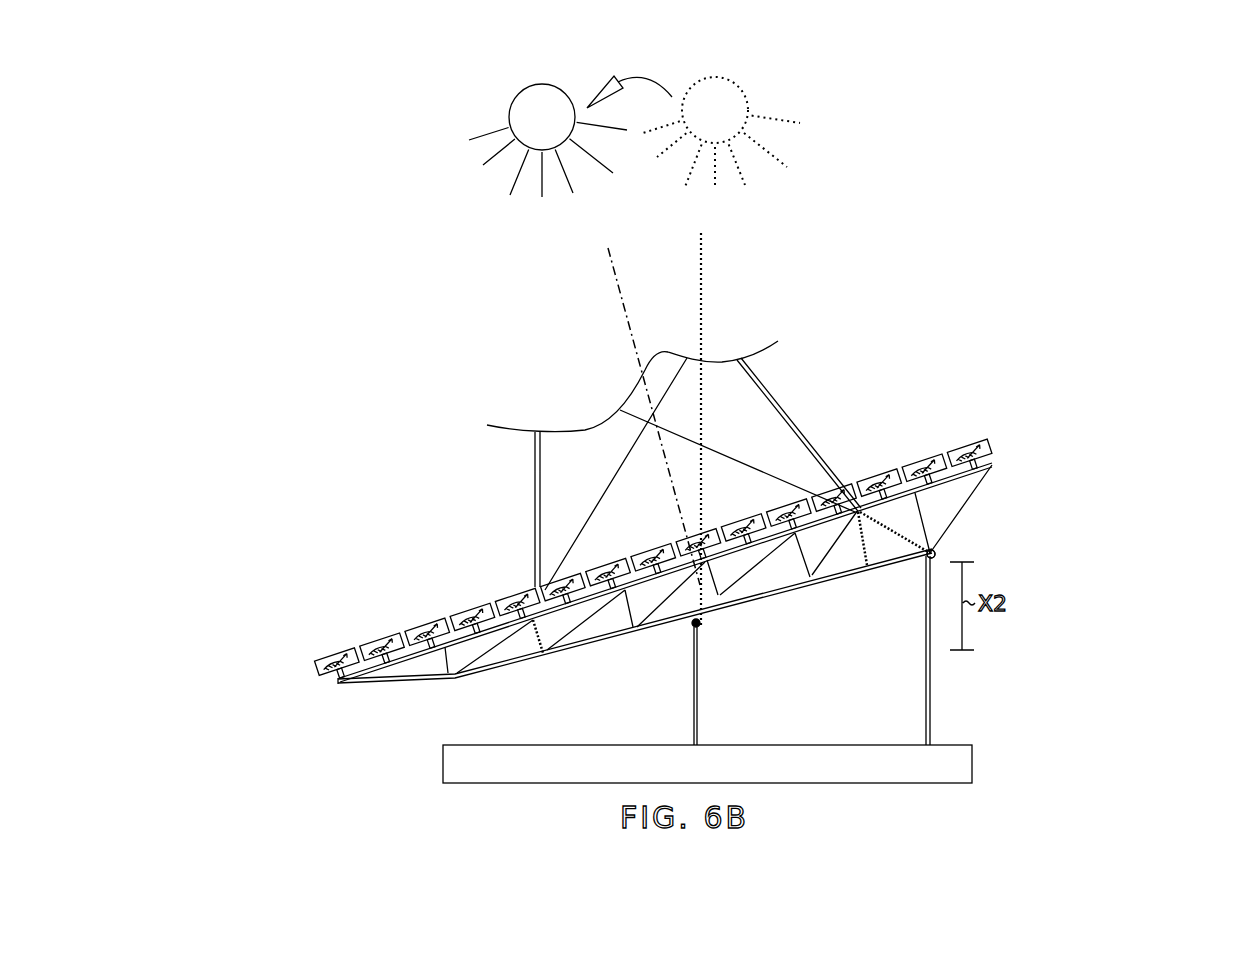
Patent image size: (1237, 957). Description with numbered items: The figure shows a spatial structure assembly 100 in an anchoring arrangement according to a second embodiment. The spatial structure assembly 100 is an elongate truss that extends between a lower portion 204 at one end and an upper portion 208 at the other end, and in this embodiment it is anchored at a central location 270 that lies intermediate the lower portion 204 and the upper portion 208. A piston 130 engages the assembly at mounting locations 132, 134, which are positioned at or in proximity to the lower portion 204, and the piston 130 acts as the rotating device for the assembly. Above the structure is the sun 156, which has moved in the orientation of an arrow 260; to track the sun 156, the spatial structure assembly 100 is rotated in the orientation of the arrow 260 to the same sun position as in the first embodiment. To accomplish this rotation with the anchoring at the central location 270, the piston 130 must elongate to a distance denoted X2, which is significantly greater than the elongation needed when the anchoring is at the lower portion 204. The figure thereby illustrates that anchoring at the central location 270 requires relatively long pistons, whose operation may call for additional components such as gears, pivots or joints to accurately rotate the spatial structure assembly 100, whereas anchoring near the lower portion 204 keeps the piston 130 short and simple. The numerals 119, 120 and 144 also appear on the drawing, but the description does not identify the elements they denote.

The spatial structure assembly 100 is at (740, 611).
The truss support structure 119 is at (1012, 667).
The solar collector assembly 120 is at (1147, 145).
The piston 130 is at (929, 720).
The mounting location 132 is at (933, 553).
The mounting location 134 is at (931, 554).
The central post 144 is at (695, 703).
The sun 156 is at (514, 109).
The lower portion 204 is at (1012, 483).
The upper portion 208 is at (318, 697).
The arrow 260 is at (658, 81).
The central location 270 is at (695, 623).